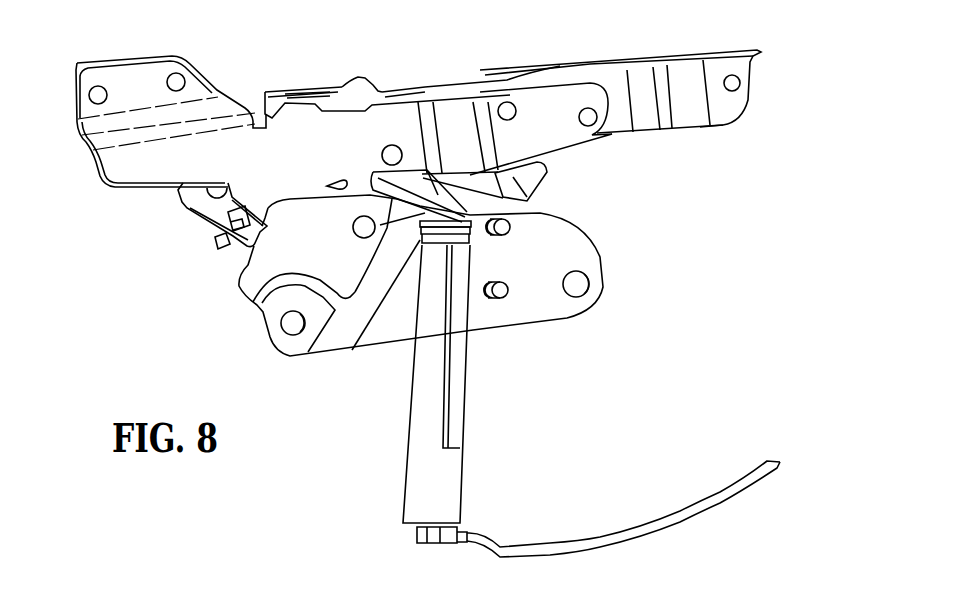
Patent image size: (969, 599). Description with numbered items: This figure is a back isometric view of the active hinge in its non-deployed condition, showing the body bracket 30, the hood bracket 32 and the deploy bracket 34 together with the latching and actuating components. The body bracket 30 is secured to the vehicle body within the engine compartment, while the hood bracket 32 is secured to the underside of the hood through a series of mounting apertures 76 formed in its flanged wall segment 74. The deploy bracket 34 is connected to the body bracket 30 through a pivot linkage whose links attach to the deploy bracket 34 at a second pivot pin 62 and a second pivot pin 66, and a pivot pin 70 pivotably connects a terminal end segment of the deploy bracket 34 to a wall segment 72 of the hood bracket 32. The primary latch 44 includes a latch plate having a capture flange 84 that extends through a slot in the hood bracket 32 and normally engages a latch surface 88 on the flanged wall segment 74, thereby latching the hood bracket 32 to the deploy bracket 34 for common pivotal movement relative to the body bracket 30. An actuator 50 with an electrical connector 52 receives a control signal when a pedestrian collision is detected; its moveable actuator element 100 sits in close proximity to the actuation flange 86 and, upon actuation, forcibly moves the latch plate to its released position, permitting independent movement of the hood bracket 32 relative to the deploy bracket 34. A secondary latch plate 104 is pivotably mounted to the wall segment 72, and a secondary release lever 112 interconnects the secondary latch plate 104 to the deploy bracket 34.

The body bracket 30 is at (603, 285).
The hood bracket 32 is at (651, 52).
The deploy bracket 34 is at (128, 170).
The primary latch 44 is at (380, 225).
The actuator 50 is at (418, 458).
The electrical connector 52 is at (698, 505).
The second pivot pin 62 is at (176, 84).
The second pivot pin 66 is at (97, 98).
The pivot pin 70 is at (590, 119).
The wall segment 72 is at (727, 113).
The flanged wall segment 74 is at (760, 52).
The mounting apertures 76 is at (607, 62).
The capture flange 84 is at (372, 82).
The actuation flange 86 is at (486, 232).
The latch surface 88 is at (400, 88).
The moveable actuator element 100 is at (446, 240).
The secondary latch plate 104 is at (537, 175).
The secondary release lever 112 is at (547, 212).